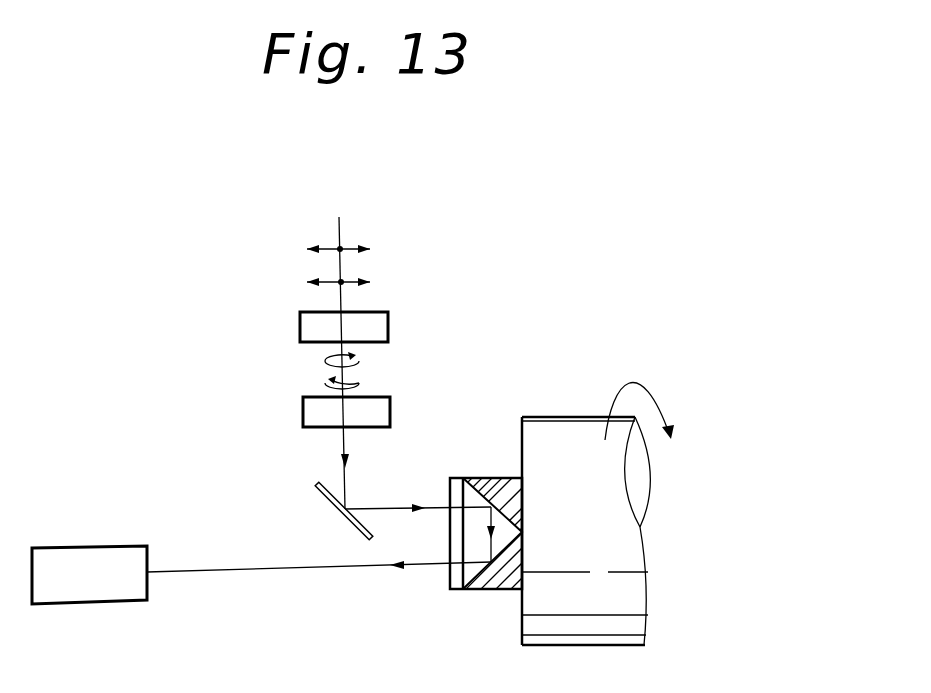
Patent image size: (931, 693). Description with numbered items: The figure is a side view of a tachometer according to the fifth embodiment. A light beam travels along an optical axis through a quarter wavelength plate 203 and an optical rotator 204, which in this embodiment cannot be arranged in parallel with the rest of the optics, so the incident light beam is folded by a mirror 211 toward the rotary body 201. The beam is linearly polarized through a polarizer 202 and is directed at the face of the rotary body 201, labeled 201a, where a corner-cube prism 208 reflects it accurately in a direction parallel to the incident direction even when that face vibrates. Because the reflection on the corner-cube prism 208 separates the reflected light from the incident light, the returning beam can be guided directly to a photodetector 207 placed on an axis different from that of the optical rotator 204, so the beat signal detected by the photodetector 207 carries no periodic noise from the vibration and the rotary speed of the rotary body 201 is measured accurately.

The rotary body 201 is at (580, 491).
The drum surface 201a is at (520, 437).
The polarizer 202 is at (488, 554).
The 1/4 wavelength plate 203 is at (412, 312).
The optical rotator 204 is at (383, 406).
The photodetector 207 is at (80, 558).
The corner-cube prism 208 is at (478, 590).
The mirror 211 is at (335, 508).